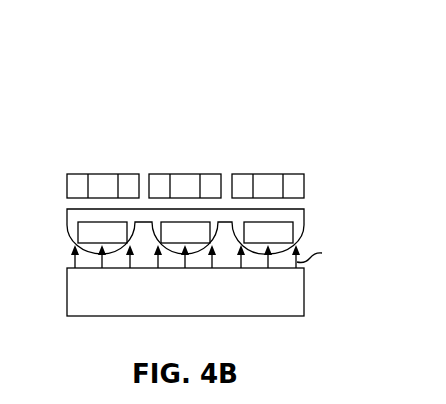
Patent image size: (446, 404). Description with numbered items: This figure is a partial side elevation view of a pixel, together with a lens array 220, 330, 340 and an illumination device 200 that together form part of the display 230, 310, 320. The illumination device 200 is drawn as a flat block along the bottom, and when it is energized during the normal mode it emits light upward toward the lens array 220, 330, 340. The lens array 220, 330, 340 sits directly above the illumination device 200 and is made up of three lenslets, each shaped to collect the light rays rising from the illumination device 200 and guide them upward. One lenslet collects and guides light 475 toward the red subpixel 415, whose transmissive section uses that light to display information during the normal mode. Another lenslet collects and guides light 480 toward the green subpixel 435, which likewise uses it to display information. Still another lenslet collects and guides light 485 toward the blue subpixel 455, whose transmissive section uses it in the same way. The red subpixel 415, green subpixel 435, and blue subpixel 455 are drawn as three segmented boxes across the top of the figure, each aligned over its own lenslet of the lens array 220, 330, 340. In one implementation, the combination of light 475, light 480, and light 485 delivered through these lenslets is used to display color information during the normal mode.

The display 230 is at (207, 171).
The display 310 is at (207, 171).
The display 320 is at (148, 64).
The lens array 220 is at (236, 204).
The lens array 330 is at (236, 204).
The lens array 340 is at (306, 218).
The red subpixel 415 is at (101, 173).
The green subpixel 435 is at (183, 173).
The blue subpixel 455 is at (266, 173).
The light 475 is at (89, 240).
The light 480 is at (171, 240).
The light 485 is at (254, 240).
The illumination device 200 is at (283, 298).